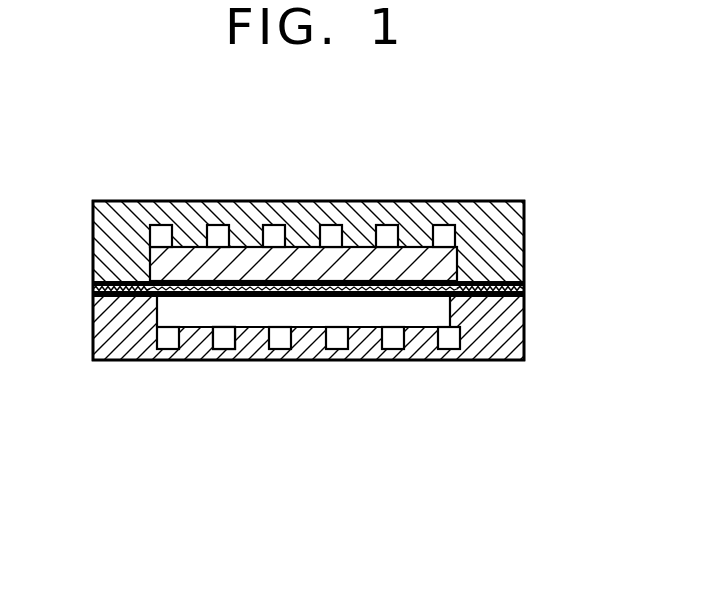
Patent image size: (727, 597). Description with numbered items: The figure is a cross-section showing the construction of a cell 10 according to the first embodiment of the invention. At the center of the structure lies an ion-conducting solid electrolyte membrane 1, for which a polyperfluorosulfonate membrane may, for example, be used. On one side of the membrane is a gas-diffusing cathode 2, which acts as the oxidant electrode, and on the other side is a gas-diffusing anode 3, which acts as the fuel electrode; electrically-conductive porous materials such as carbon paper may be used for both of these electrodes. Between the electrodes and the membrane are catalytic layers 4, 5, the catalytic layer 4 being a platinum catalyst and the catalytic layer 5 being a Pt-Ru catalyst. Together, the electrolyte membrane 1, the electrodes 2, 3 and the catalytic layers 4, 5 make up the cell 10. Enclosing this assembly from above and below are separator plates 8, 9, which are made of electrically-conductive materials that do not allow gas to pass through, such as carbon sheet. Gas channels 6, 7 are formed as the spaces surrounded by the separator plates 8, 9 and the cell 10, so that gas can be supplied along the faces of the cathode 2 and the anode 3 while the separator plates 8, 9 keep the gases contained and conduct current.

The ion-conducting solid electrolyte membrane 1 is at (524, 289).
The gas-diffusing cathode 2 is at (457, 252).
The gas-diffusing anode 3 is at (437, 331).
The catalytic layer 4 is at (437, 283).
The catalytic layer 5 is at (437, 298).
The gas channel 6 is at (221, 232).
The gas channel 7 is at (223, 343).
The separator plate 8 is at (100, 247).
The separator plate 9 is at (100, 326).
The cell 10 is at (603, 205).